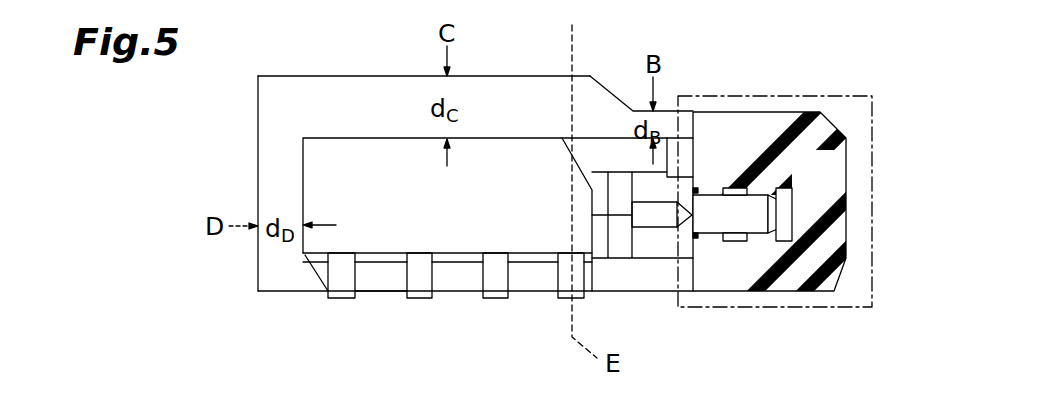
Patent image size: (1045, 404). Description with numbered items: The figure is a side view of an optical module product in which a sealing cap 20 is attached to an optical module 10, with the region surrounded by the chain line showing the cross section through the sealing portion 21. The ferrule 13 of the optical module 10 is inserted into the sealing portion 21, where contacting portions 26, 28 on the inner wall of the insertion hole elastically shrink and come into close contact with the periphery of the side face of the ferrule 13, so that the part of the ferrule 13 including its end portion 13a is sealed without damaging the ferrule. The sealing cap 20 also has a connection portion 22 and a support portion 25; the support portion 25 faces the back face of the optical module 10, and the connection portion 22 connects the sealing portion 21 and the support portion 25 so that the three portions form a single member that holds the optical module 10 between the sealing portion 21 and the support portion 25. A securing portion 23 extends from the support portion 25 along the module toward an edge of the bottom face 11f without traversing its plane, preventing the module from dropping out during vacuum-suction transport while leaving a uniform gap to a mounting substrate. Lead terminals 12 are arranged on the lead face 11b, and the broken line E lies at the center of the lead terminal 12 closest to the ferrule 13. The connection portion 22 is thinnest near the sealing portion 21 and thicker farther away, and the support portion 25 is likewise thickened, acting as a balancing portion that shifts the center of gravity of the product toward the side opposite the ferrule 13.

The optical module 10 is at (466, 301).
The lead face 11b is at (540, 247).
The bottom face 11f is at (371, 302).
The lead terminal 12 is at (417, 298).
The ferrule 13 is at (733, 218).
The end portion 13a is at (786, 220).
The sealing cap 20 is at (500, 68).
The sealing portion 21 is at (757, 112).
The connection portion 22 is at (361, 76).
The securing portion 23 is at (313, 292).
The support portion 25 is at (258, 163).
The contacting portion 26 is at (712, 239).
The contacting portion 28 is at (768, 242).